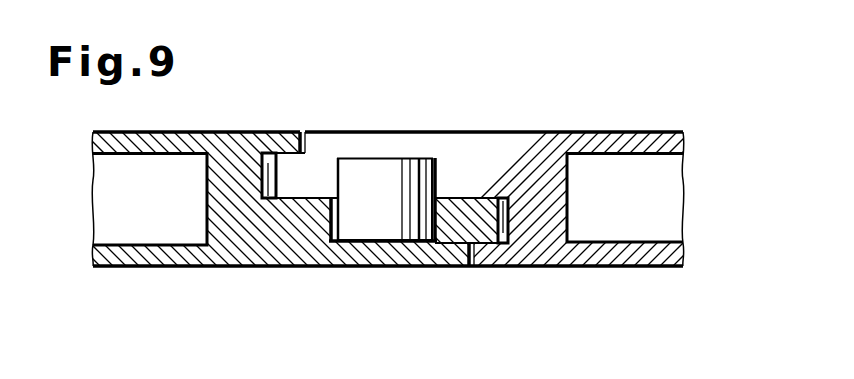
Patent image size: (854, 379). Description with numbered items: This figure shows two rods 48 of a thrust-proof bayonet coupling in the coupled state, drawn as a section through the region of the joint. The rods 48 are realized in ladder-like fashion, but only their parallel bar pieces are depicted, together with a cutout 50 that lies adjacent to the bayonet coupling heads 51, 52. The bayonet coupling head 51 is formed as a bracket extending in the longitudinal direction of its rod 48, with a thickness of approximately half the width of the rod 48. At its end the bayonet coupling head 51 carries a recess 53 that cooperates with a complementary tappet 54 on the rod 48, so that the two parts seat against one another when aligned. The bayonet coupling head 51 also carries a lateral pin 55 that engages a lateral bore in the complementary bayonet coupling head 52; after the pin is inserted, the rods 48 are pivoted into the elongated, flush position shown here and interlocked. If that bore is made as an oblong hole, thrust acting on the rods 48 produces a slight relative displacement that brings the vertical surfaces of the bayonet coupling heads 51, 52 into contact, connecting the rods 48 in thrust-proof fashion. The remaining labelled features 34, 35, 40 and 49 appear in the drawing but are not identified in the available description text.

The second housing part 34 is at (633, 136).
The first housing part 35 is at (147, 147).
The latching tab 40 is at (270, 192).
The rod 48 is at (526, 111).
The housing wall 49 is at (143, 256).
The cutout 50 is at (128, 206).
The bayonet coupling head 51 is at (390, 142).
The bayonet coupling head 52 is at (362, 250).
The recess 53 is at (302, 150).
The tappet 54 is at (288, 148).
The lateral pin 55 is at (421, 162).